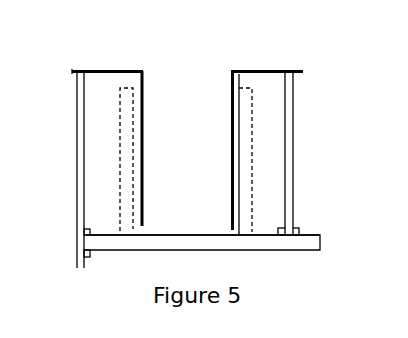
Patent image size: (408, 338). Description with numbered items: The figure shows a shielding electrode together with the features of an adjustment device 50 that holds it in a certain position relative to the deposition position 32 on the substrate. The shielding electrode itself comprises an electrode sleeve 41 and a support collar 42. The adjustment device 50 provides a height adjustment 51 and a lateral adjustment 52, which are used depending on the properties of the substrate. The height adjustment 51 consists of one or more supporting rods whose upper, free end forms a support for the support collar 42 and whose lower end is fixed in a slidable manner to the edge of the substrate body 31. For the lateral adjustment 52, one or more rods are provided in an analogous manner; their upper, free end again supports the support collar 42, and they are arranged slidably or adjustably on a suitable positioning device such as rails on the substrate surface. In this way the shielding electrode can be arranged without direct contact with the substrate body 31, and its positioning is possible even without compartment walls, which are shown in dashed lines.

The adjustment device 50 is at (60, 123).
The height adjustment 51 is at (82, 120).
The substrate body 31 is at (132, 242).
The deposition position 32 is at (187, 235).
The electrode sleeve 41 is at (228, 117).
The support collar 42 is at (267, 70).
The lateral adjustment 52 is at (293, 157).